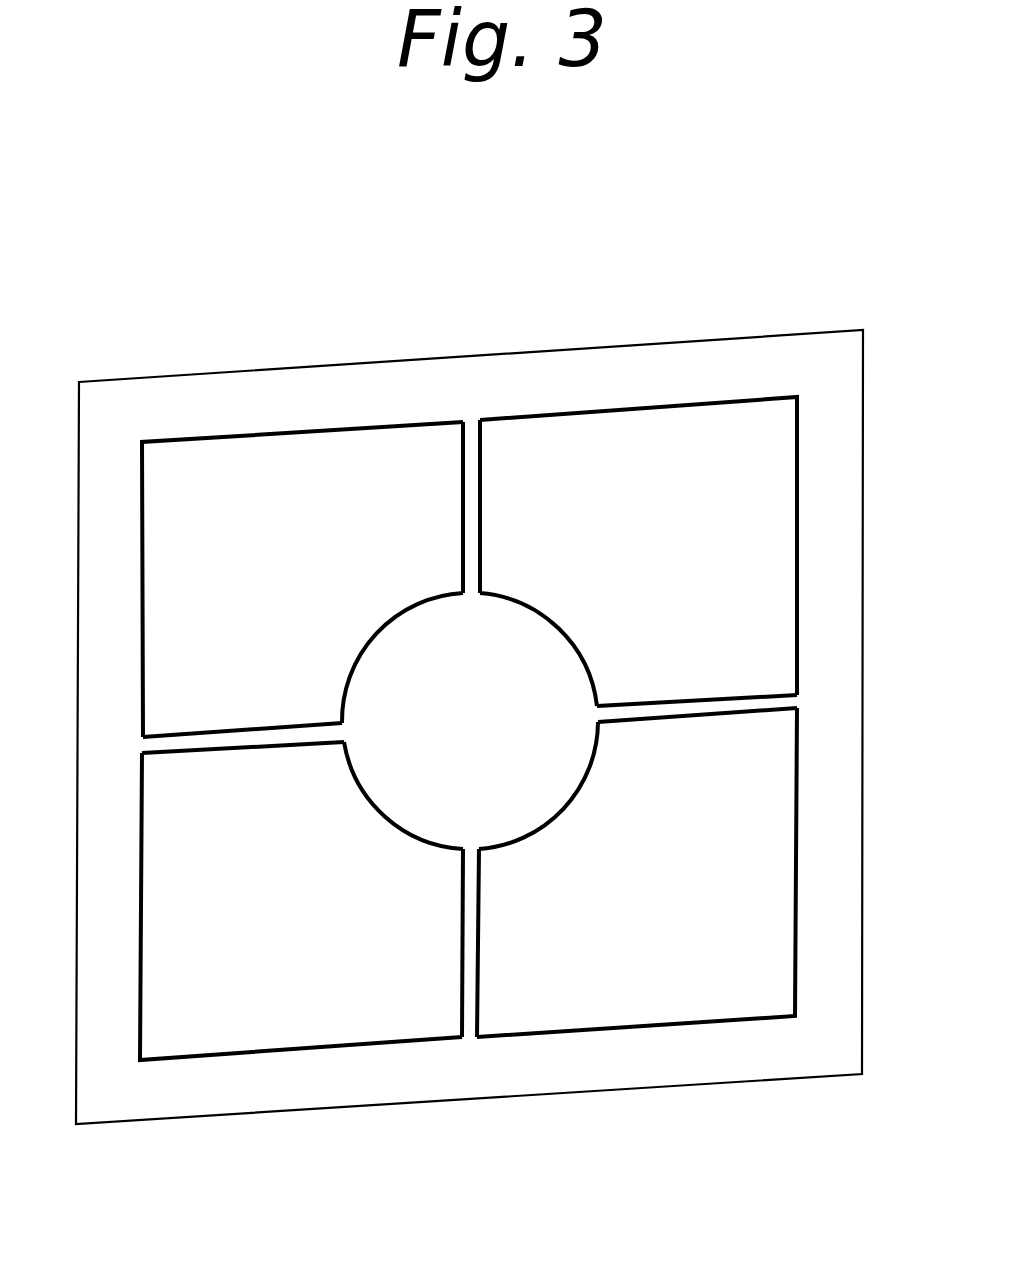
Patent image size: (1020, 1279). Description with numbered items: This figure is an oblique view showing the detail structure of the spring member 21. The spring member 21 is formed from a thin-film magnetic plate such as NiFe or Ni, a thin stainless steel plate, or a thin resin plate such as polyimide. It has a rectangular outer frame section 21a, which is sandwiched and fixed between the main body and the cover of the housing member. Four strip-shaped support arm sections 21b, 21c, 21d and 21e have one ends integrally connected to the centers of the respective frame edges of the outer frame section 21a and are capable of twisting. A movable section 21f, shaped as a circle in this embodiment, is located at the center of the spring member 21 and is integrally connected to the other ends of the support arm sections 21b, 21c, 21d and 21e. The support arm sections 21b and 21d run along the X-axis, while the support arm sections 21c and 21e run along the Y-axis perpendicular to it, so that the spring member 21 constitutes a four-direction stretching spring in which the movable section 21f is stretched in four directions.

The spring member 21 is at (828, 268).
The rectangular outer frame section 21a is at (614, 372).
The support arm section 21b is at (227, 740).
The support arm section 21c is at (472, 475).
The support arm section 21d is at (690, 708).
The support arm section 21e is at (470, 952).
The movable section 21f is at (553, 792).